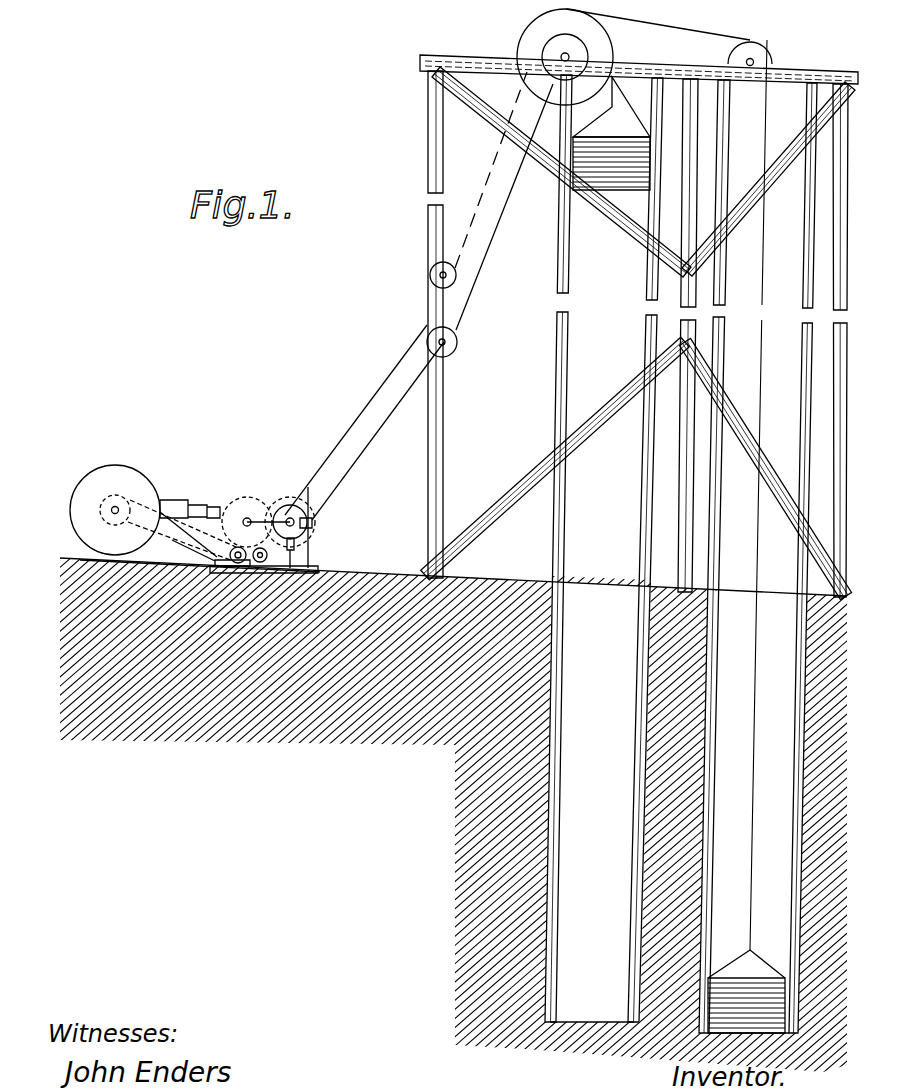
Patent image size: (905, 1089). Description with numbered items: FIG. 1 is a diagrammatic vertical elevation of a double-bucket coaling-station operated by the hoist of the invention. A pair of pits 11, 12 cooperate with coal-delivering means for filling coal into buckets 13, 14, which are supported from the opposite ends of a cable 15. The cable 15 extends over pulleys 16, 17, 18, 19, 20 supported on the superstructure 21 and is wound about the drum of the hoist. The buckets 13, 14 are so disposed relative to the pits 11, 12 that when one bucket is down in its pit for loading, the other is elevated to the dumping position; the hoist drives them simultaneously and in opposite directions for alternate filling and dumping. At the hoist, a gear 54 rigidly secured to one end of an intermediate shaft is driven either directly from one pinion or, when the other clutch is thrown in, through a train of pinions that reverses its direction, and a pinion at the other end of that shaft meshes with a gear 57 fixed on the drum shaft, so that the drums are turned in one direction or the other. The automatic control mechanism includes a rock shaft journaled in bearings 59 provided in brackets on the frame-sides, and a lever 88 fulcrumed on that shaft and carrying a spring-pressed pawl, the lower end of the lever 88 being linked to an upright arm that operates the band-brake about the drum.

The pit 11 is at (758, 556).
The pit 12 is at (604, 548).
The bucket 13 is at (730, 997).
The bucket 14 is at (620, 175).
The cable 15 is at (377, 382).
The pulley 16 is at (450, 345).
The pulley 17 is at (440, 282).
The pulley 18 is at (530, 33).
The pulley 19 is at (573, 50).
The pulley 20 is at (766, 55).
The superstructure 21 is at (428, 120).
The gear 54 is at (243, 500).
The gear 57 is at (290, 500).
The bearings 59 is at (232, 565).
The lever 88 is at (307, 523).